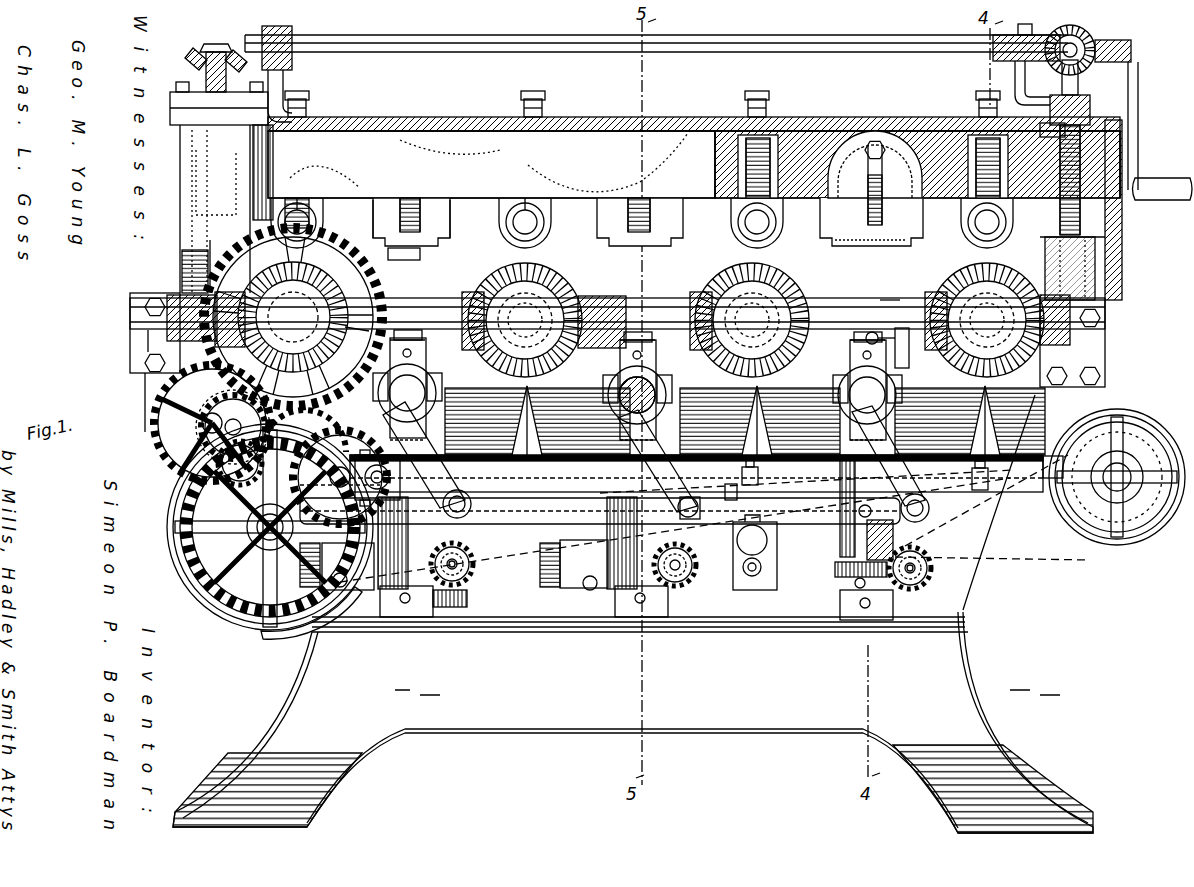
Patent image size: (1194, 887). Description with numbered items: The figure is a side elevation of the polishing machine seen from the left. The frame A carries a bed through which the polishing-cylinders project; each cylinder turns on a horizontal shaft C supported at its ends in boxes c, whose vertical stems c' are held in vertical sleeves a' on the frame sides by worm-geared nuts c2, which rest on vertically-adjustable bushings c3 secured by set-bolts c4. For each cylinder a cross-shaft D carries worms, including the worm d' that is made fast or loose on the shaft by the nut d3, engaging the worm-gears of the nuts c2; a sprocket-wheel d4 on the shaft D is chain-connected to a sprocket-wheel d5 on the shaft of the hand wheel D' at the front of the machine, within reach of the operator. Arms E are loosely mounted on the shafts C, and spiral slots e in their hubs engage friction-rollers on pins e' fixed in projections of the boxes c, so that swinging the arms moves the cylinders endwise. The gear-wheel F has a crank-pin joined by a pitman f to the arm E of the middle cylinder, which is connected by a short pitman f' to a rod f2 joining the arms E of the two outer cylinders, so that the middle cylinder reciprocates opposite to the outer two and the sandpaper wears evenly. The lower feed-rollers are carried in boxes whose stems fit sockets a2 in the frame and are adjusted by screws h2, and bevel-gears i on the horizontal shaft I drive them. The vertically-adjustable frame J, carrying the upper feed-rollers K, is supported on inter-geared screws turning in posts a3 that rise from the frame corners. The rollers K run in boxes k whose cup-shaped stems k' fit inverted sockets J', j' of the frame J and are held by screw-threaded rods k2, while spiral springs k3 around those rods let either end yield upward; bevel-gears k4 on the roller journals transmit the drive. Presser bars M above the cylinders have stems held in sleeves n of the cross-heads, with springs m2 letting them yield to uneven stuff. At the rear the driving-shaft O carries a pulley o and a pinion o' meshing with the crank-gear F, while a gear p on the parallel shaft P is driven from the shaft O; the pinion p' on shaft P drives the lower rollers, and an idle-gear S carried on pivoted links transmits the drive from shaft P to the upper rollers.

The screw-threaded rods k2 is at (303, 100).
The vertically-adjustable frame J is at (491, 164).
The sockets J' is at (906, 164).
The sockets j' is at (1083, 126).
The hollow or cup-shaped stems k' is at (873, 166).
The standards or posts a3 is at (643, 215).
The upper feed-rollers K is at (318, 225).
The boxes k is at (625, 213).
The springs m2 is at (408, 205).
The vertical sleeves n is at (373, 215).
The presser bars or plates M is at (472, 250).
The spiral springs k3 is at (660, 233).
The bevel-gears k4 is at (404, 263).
The bevel-gears i is at (230, 258).
The horizontal shaft I is at (885, 300).
The frame A is at (168, 352).
The shaft P is at (293, 317).
The pinion p' is at (304, 398).
The idle-gear S is at (176, 486).
The pulley o is at (221, 503).
The feed-roller and vibrator driving-shaft O is at (262, 560).
The pinion o' is at (252, 534).
The gear p is at (283, 619).
The gear-wheel F is at (340, 477).
The pitman f is at (463, 478).
The arms E is at (696, 462).
The rod f2 is at (600, 511).
The short pitman f' is at (729, 483).
The screws h2 is at (758, 478).
The horizontal shaft C is at (637, 385).
The boxes c is at (662, 370).
The vertical stems c' is at (637, 457).
The spiral or inclined slots e is at (847, 361).
The pins e' is at (912, 356).
The sockets a2 is at (753, 420).
The vertical sleeves a' is at (635, 523).
The nuts c2 is at (835, 570).
The vertically-adjustable bushings c3 is at (855, 585).
The set-bolts c4 is at (404, 604).
The cross-shaft D is at (694, 573).
The worm d' is at (732, 552).
The nut d3 is at (734, 565).
The sprocket-wheel d4 is at (465, 575).
The sprocket-wheel d5 is at (1096, 535).
The crank or hand wheel D' is at (1114, 465).